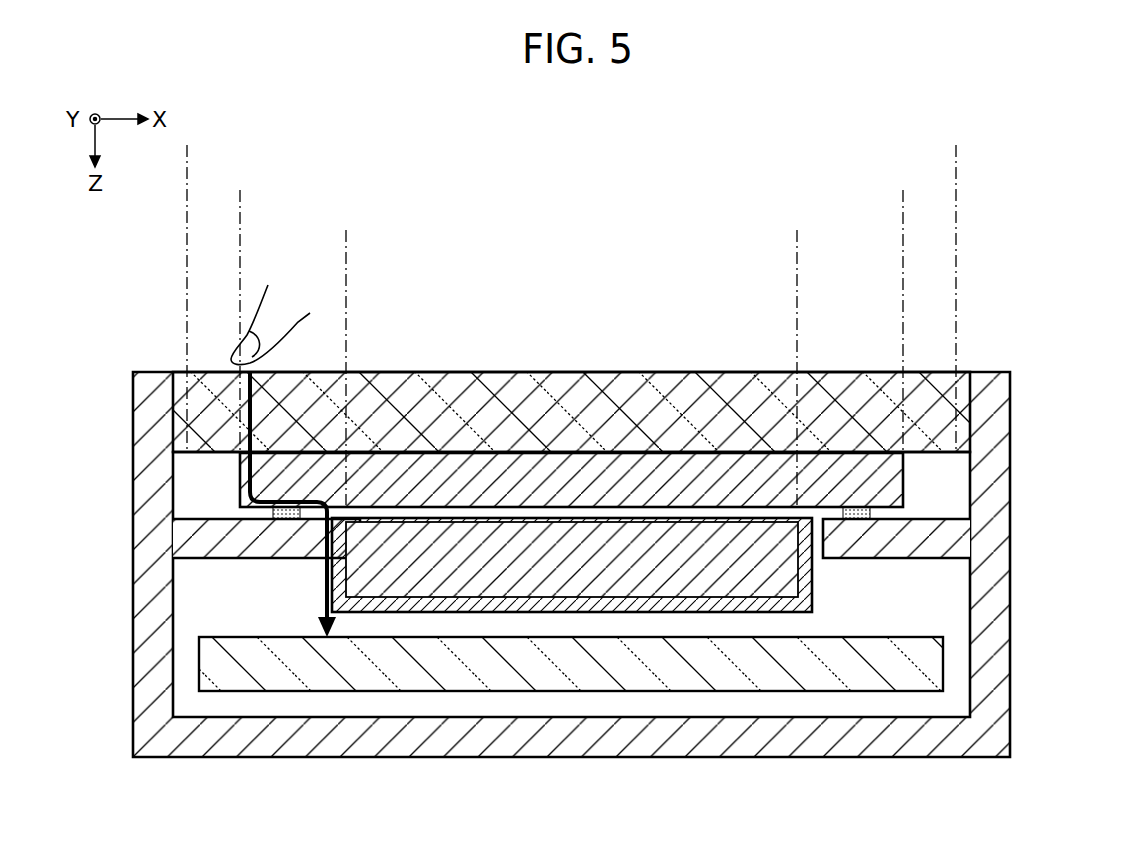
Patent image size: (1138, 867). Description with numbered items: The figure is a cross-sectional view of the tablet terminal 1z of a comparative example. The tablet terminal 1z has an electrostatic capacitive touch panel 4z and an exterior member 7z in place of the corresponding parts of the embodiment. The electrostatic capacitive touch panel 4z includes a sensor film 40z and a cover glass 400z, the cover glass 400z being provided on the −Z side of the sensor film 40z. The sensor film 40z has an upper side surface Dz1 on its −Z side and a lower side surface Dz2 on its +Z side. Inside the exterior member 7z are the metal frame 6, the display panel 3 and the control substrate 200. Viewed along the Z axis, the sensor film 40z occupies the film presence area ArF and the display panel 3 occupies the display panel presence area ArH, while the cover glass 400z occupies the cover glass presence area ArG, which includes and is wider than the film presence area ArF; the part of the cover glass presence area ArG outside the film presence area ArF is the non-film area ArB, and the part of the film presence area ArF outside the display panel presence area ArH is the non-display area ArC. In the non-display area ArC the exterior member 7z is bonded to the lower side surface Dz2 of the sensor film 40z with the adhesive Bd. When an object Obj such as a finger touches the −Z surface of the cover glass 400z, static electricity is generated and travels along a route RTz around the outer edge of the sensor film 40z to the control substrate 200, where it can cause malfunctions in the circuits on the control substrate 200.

The tablet terminal 1z is at (1072, 157).
The exterior member 7z is at (1000, 545).
The electrostatic capacitive touch panel 4z is at (612, 326).
The sensor film 40z is at (493, 462).
The cover glass 400z is at (568, 413).
The upper side surface Dz1 is at (427, 446).
The lower side surface Dz2 is at (657, 526).
The metal frame 6 is at (630, 607).
The display panel 3 is at (546, 573).
The control substrate 200 is at (707, 660).
The adhesive Bd is at (858, 512).
The route RTz is at (323, 600).
The object Obj is at (262, 305).
The cover glass presence area ArG is at (187, 158).
The film presence area ArF is at (240, 200).
The non-film area ArB is at (956, 200).
The non-display area ArC is at (903, 240).
The display panel presence area ArH is at (346, 240).